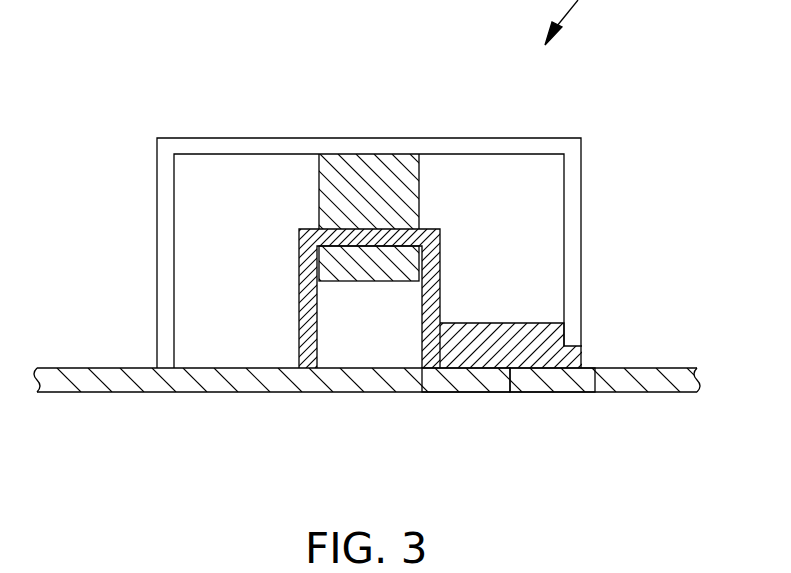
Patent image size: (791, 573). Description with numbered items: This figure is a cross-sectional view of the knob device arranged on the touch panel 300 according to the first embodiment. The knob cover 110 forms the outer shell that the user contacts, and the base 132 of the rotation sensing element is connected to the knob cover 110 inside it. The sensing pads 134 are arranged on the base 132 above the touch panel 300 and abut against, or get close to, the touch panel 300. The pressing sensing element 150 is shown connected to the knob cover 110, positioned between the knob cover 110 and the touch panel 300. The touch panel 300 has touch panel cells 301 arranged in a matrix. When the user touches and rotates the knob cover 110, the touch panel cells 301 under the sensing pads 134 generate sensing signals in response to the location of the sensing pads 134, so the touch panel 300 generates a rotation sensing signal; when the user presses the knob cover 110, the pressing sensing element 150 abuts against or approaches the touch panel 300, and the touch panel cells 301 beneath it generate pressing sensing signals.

The knob cover 110 is at (577, 173).
The pressing sensing element 150 is at (370, 182).
The base 132 is at (432, 283).
The sensing pads 134 is at (548, 334).
The touch panel 300 is at (672, 380).
The touch panel cells 301 is at (462, 380).